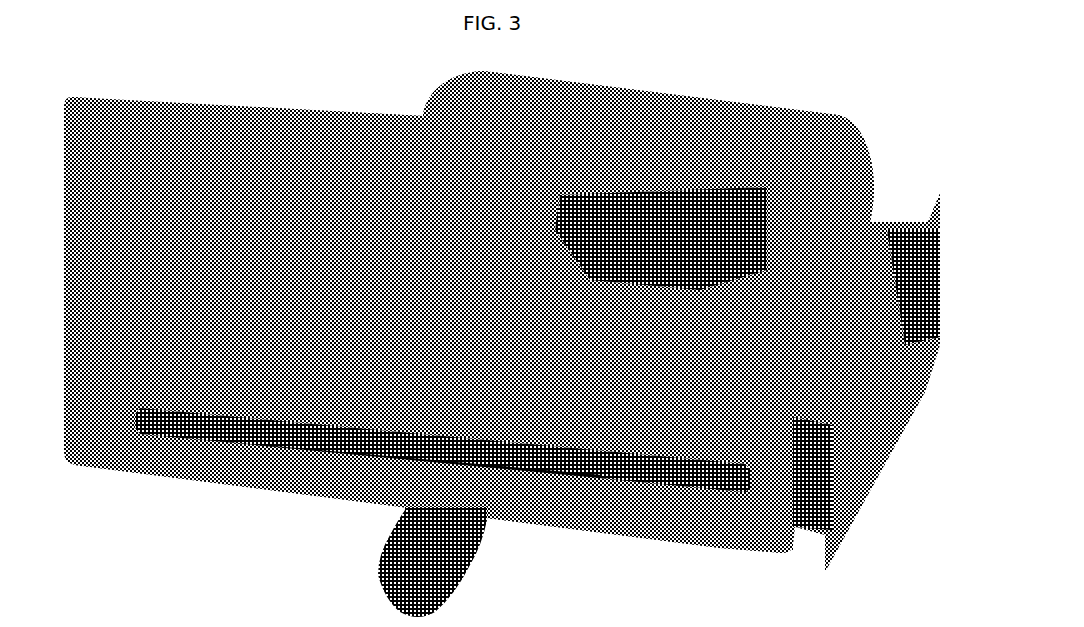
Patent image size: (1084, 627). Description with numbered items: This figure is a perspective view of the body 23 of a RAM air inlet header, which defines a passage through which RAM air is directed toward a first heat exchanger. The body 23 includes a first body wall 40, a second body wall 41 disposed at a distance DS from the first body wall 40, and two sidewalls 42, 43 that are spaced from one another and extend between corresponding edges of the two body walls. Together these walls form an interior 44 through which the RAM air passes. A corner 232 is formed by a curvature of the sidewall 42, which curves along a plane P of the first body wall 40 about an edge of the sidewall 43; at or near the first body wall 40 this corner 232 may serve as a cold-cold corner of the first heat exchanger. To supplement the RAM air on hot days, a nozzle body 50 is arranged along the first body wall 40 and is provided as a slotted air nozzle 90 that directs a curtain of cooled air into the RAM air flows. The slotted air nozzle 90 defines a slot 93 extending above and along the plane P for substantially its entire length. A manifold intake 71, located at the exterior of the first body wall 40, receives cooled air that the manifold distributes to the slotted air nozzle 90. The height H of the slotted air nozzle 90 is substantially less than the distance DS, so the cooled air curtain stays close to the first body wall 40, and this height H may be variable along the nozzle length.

The body 23 is at (818, 270).
The first body wall 40 is at (305, 470).
The second body wall 41 is at (335, 155).
The sidewall 42 is at (95, 195).
The sidewall 43 is at (768, 443).
The interior 44 is at (429, 236).
The nozzle body 50 is at (158, 439).
The manifold intake 71 is at (413, 575).
The slotted air nozzle 90 is at (623, 487).
The slot 93 is at (695, 487).
The corner 232 is at (767, 530).
The distance DS is at (556, 190).
The height H is at (515, 491).
The plane P is at (401, 475).